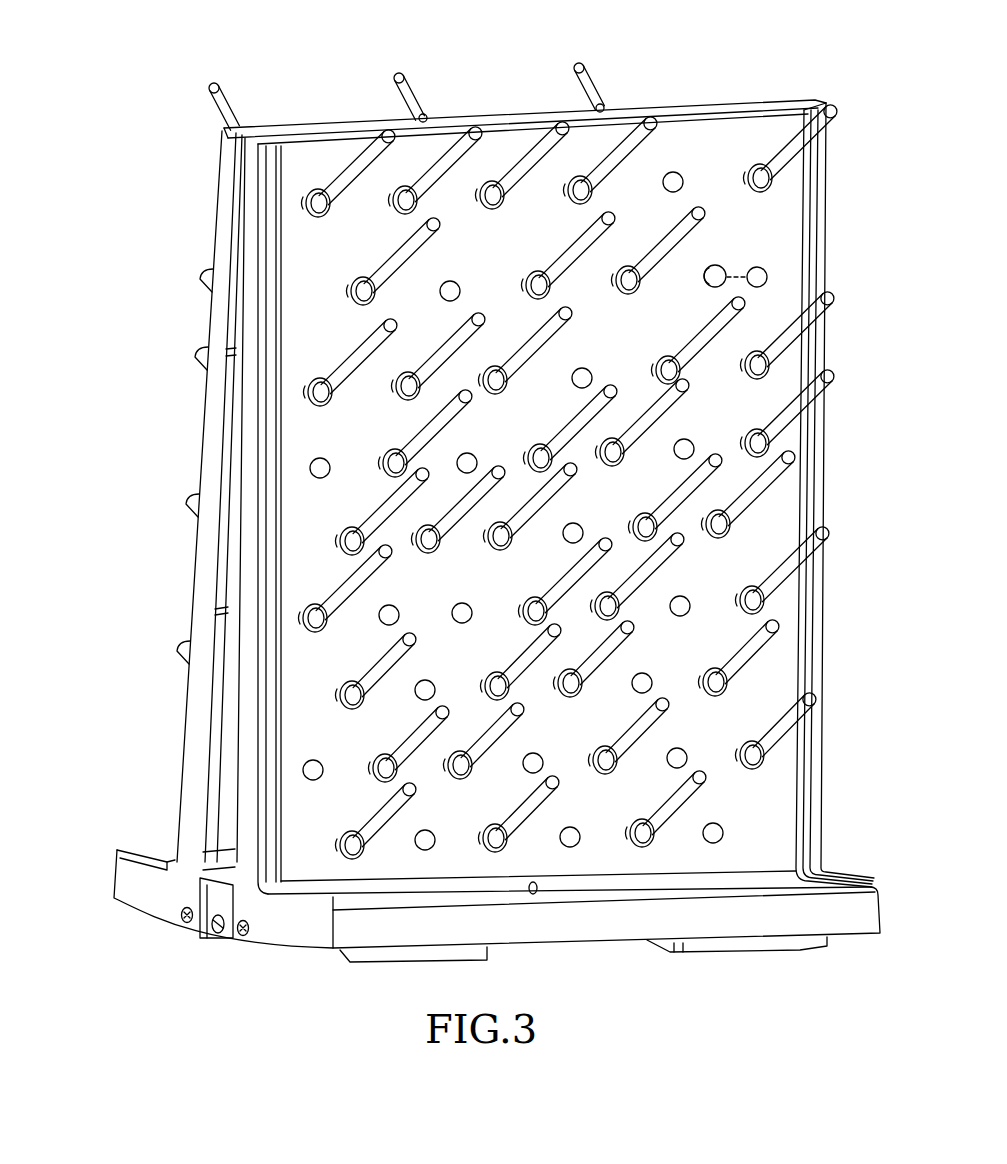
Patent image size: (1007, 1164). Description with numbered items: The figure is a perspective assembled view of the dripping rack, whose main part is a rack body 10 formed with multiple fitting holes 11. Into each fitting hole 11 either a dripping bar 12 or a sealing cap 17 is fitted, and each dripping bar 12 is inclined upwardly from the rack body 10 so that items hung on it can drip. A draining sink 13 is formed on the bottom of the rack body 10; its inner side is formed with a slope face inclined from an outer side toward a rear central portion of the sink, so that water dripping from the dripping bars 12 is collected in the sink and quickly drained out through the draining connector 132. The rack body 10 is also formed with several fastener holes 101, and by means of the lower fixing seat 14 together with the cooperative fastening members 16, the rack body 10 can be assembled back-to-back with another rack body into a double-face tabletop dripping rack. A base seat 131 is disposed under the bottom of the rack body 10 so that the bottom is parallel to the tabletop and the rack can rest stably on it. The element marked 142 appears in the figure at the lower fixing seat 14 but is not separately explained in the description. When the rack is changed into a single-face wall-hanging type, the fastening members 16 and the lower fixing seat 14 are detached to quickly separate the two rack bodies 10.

The rack body 10 is at (302, 120).
The fastener holes 101 is at (404, 115).
The fitting holes 11 is at (672, 172).
The dripping bar 12 is at (832, 110).
The draining sink 13 is at (832, 880).
The base seat 131 is at (787, 945).
The draining connector 132 is at (537, 890).
The lower fixing seat 14 is at (208, 938).
The screw 142 is at (218, 933).
The fastening members 16 is at (423, 118).
The sealing caps 17 is at (767, 276).